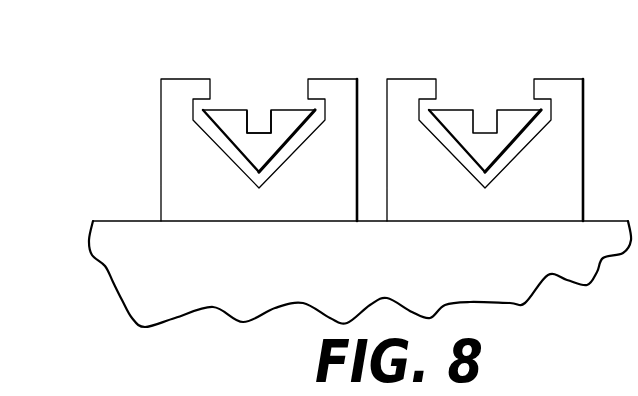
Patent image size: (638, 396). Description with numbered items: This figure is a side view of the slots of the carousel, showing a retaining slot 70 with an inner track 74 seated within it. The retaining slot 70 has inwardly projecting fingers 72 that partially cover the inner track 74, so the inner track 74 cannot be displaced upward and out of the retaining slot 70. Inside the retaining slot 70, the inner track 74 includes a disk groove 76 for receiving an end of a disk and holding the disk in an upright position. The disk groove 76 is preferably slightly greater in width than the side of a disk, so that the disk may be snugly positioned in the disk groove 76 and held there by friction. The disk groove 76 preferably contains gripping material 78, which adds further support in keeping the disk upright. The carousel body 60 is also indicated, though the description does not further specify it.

The support base 60 is at (172, 233).
The retaining slot 70 is at (260, 207).
The inwardly projecting fingers 72 is at (178, 82).
The inner track 74 is at (222, 126).
The disk groove 76 is at (258, 116).
The gripping material 78 is at (265, 135).